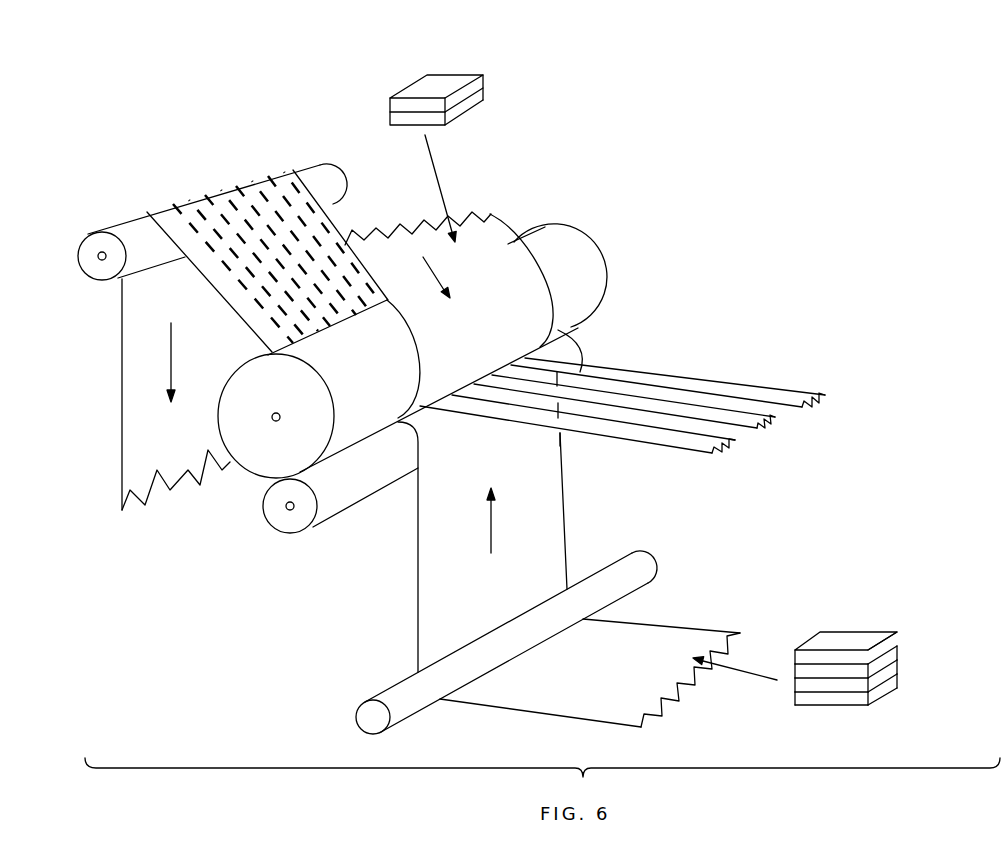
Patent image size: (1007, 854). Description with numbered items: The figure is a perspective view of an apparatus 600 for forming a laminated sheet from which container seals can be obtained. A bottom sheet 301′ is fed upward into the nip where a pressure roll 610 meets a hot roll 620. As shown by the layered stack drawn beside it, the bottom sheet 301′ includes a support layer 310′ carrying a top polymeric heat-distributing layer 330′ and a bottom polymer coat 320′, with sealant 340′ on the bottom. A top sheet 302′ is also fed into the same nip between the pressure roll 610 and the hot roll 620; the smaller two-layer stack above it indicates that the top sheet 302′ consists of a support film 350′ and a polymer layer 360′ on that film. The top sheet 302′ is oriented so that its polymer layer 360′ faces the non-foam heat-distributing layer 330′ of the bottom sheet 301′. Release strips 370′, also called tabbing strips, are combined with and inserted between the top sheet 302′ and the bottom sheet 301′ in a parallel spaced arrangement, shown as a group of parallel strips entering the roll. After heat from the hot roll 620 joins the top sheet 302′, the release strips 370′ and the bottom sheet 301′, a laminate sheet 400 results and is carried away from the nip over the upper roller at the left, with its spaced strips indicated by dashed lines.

The laminate sheet 400 is at (168, 224).
The hot roll 620 is at (259, 404).
The top sheet 302′ is at (493, 252).
The pressure roll 610 is at (265, 538).
The apparatus 600 is at (299, 608).
The bottom sheet 301′ is at (535, 692).
The release strips 370′ is at (350, 208).
The support film 350′ is at (463, 107).
The polymer layer 360′ is at (480, 83).
The polymeric heat-distributing layer 330′ is at (890, 645).
The support layer 310′ is at (895, 660).
The bottom polymer coat 320′ is at (897, 670).
The sealant 340′ is at (888, 690).